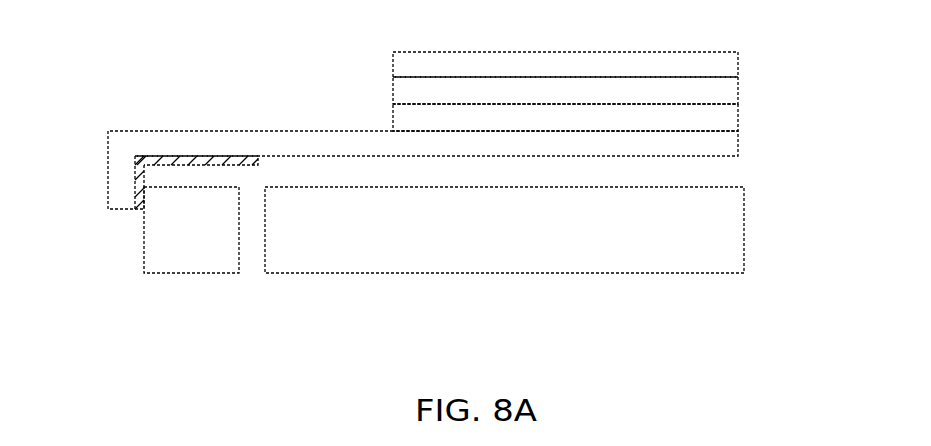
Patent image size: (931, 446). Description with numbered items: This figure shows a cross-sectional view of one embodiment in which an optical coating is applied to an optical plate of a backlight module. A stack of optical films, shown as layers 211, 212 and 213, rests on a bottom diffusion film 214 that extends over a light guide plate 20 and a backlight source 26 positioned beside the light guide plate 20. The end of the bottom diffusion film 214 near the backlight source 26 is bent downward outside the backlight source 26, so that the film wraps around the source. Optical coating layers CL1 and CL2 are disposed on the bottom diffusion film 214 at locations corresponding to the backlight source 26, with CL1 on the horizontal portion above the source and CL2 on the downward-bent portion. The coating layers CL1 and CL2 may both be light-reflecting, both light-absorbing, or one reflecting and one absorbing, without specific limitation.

The first layer 211 is at (732, 66).
The second layer 212 is at (732, 93).
The third layer 213 is at (732, 120).
The bottom diffusion film 214 is at (732, 146).
The optical coating layer CL1 is at (190, 156).
The optical coating layer CL2 is at (137, 174).
The backlight source 26 is at (212, 248).
The light guide plate 20 is at (515, 248).